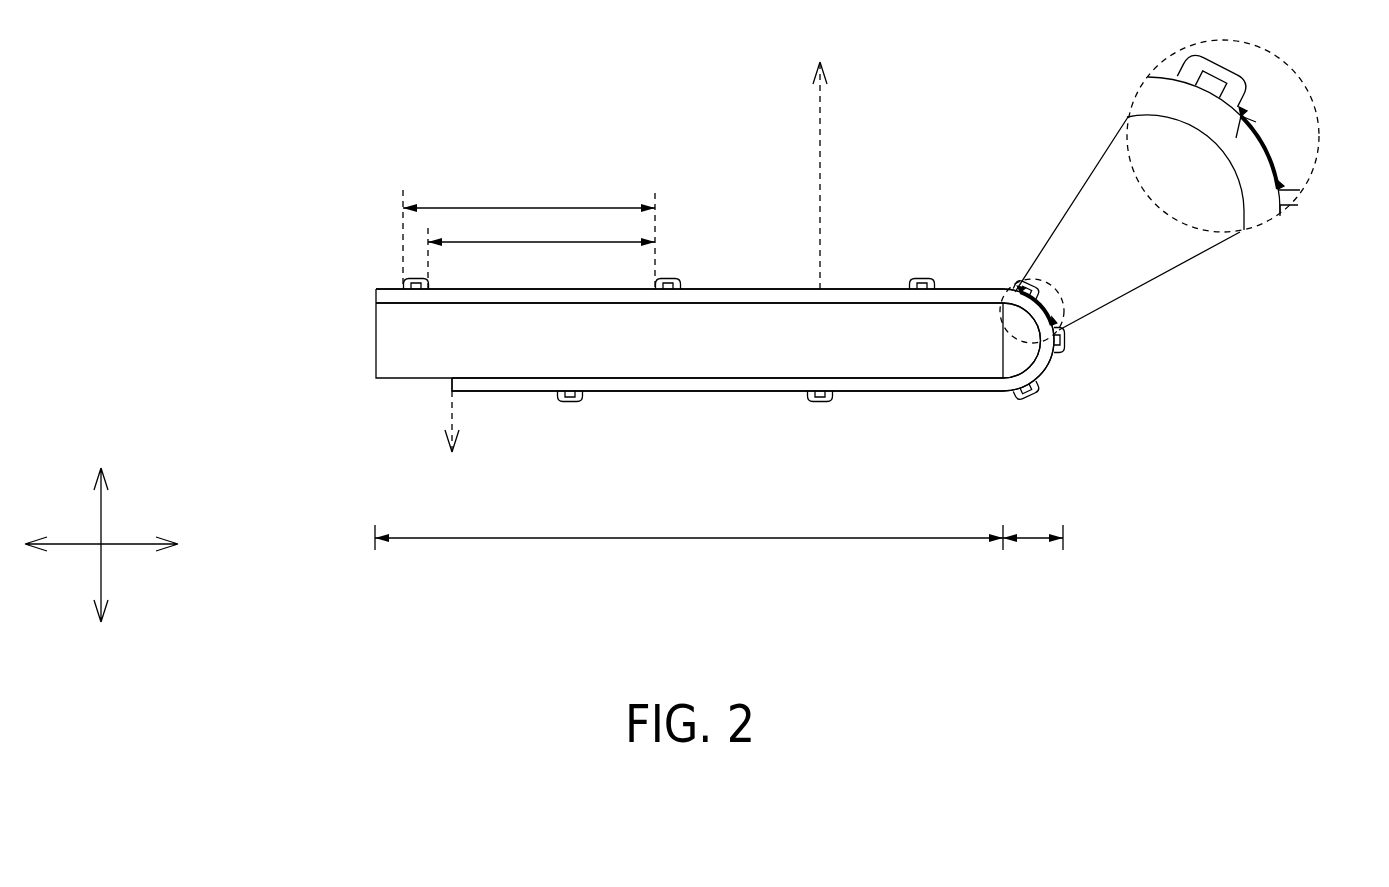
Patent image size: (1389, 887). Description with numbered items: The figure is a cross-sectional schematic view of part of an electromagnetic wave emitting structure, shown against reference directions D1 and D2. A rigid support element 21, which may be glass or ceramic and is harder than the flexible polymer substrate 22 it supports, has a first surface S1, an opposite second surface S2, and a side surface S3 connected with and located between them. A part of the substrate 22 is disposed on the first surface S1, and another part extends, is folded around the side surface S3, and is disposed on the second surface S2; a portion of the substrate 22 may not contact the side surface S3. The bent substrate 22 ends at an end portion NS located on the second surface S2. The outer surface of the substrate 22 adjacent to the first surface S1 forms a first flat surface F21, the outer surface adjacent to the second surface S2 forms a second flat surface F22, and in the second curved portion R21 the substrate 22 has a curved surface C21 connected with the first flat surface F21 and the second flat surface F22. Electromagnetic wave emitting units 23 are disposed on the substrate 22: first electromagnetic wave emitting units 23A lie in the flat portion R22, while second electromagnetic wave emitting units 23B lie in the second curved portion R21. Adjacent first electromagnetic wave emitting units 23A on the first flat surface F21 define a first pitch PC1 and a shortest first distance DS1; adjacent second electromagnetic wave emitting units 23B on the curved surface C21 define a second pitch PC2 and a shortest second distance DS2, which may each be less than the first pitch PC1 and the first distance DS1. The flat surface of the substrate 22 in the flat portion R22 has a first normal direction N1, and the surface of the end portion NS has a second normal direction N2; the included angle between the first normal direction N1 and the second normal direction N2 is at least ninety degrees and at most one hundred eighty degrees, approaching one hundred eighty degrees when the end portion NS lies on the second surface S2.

The support element 21 is at (392, 339).
The substrate 22 is at (387, 298).
The electromagnetic wave emitting units 23 is at (729, 313).
The first electromagnetic wave emitting units 23A is at (403, 285).
The second electromagnetic wave emitting units 23B is at (1019, 289).
The end portion NS is at (452, 385).
The first surface S1 is at (460, 303).
The second surface S2 is at (520, 377).
The side surface S3 is at (1061, 340).
The first flat surface F21 is at (868, 289).
The second flat surface F22 is at (885, 392).
The curved surface C21 is at (1046, 373).
The first pitch PC1 is at (529, 230).
The second pitch PC2 is at (1051, 298).
The first distance DS1 is at (541, 258).
The second distance DS2 is at (1265, 145).
The second curved portion R21 is at (1033, 549).
The flat portion R22 is at (689, 551).
The first normal direction N1 is at (838, 175).
The second normal direction N2 is at (452, 443).
The first direction D1 is at (121, 542).
The second direction D2 is at (100, 526).